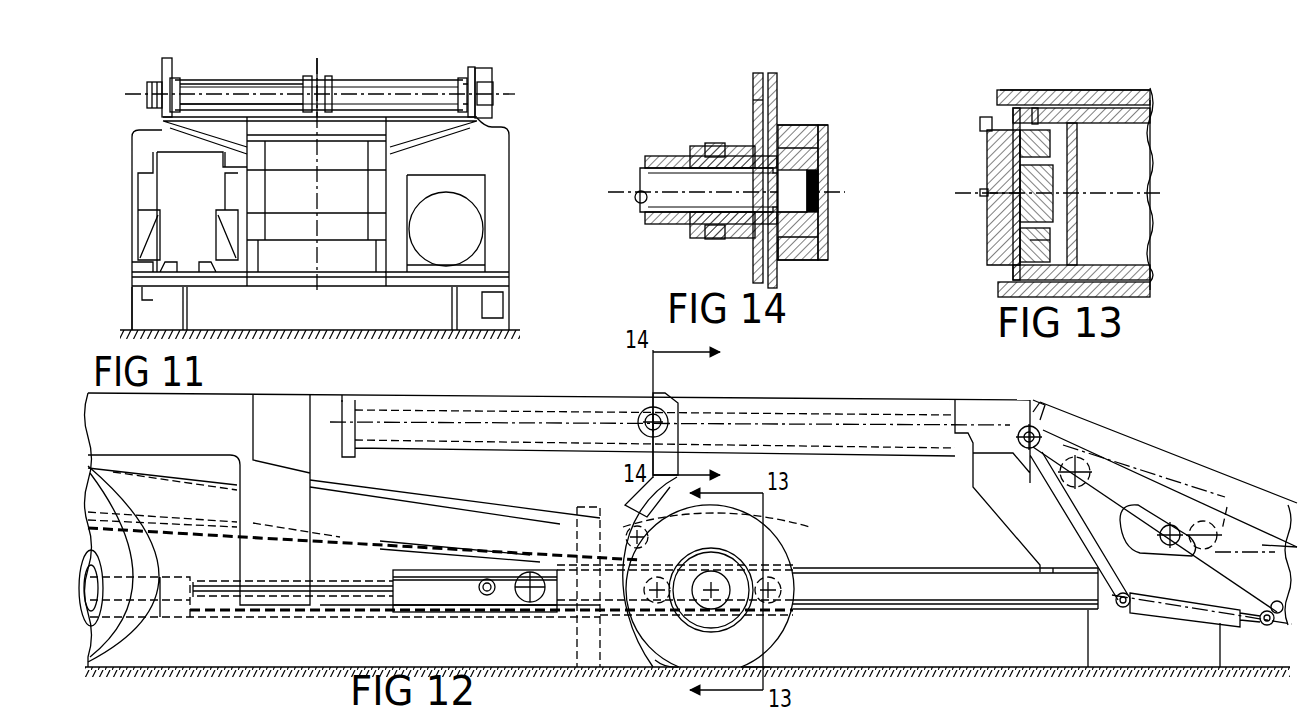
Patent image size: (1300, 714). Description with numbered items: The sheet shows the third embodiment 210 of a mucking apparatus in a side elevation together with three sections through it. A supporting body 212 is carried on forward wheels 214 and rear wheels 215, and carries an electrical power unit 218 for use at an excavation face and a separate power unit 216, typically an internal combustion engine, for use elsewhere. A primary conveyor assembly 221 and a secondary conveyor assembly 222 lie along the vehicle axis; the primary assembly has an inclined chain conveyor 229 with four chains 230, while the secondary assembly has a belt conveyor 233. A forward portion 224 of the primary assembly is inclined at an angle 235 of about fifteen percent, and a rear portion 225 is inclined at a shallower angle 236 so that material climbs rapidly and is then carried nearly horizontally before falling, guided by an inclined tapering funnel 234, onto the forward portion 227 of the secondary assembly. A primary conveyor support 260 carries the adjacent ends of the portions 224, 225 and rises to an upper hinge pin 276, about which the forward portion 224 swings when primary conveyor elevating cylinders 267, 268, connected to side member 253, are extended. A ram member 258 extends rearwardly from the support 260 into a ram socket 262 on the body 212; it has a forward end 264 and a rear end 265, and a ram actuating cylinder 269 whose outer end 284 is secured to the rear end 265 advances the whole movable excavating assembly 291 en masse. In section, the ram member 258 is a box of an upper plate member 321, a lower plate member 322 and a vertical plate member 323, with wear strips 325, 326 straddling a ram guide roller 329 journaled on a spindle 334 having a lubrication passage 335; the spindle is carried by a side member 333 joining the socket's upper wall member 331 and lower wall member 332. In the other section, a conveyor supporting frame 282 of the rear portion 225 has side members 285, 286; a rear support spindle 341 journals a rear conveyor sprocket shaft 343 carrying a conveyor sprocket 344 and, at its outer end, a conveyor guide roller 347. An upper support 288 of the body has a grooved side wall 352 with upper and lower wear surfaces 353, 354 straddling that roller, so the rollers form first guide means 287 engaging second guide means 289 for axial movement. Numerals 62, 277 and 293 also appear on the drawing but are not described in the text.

In FIG. 11, the base member 62 is at (291, 280).
In FIG. 11, the third embodiment 210 is at (533, 118).
In FIG. 12, the third embodiment 210 is at (470, 387).
In FIG. 11, the supporting body 212 is at (335, 290).
In FIG. 12, the supporting body 212 is at (297, 623).
In FIG. 11, the forward wheels 214 is at (170, 308).
In FIG. 12, the forward wheels 214 is at (772, 633).
In FIG. 12, the rear wheels 215 is at (107, 632).
In FIG. 11, the separate power unit 216 is at (188, 182).
In FIG. 11, the electrical power unit 218 is at (450, 233).
In FIG. 11, the primary conveyor assembly 221 is at (319, 65).
In FIG. 14, the primary conveyor assembly 221 is at (672, 146).
In FIG. 12, the primary conveyor assembly 221 is at (1151, 452).
In FIG. 12, the secondary conveyor assembly 222 is at (196, 453).
In FIG. 12, the forward portion of the primary conveyor assembly 224 is at (1243, 438).
In FIG. 14, the rear portion of the primary conveyor assembly 225 is at (706, 138).
In FIG. 12, the rear portion of the primary conveyor assembly 225 is at (768, 428).
In FIG. 12, the forward portion of the secondary conveyor assembly 227 is at (582, 562).
In FIG. 11, the inclined chain conveyor 229 is at (352, 38).
In FIG. 11, the chains 230 is at (333, 72).
In FIG. 12, the chains 230 is at (1227, 507).
In FIG. 12, the belt conveyor 233 is at (577, 482).
In FIG. 12, the inclined tapering funnel 234 is at (262, 420).
In FIG. 12, the angle of forward portion 235 is at (1252, 527).
In FIG. 12, the angle of rear portion 236 is at (820, 433).
In FIG. 12, the side member of the primary conveyor assembly 253 is at (1117, 452).
In FIG. 13, the ram member 258 is at (1158, 232).
In FIG. 12, the ram member 258 is at (880, 612).
In FIG. 12, the primary conveyor support 260 is at (1027, 517).
In FIG. 13, the ram socket 262 is at (1095, 88).
In FIG. 12, the ram socket 262 is at (640, 632).
In FIG. 12, the forward end of the ram member 264 is at (1088, 612).
In FIG. 12, the rear end of the ram member 265 is at (512, 567).
In FIG. 12, the primary conveyor elevating cylinder 267 is at (1169, 665).
In FIG. 12, the primary conveyor elevating cylinder 268 is at (1220, 626).
In FIG. 12, the ram actuating cylinder 269 is at (173, 575).
In FIG. 12, the upper hinge pin 276 is at (1037, 423).
In FIG. 12, the hydraulic cylinder 277 is at (1210, 578).
In FIG. 14, the conveyor supporting frame 282 is at (757, 70).
In FIG. 12, the outer end of the ram actuating cylinder 284 is at (488, 560).
In FIG. 11, the side member of the conveyor supporting frame 285 is at (466, 73).
In FIG. 14, the side member of the conveyor supporting frame 285 is at (753, 93).
In FIG. 12, the side member of the conveyor supporting frame 285 is at (670, 410).
In FIG. 11, the side member of the conveyor supporting frame 286 is at (247, 72).
In FIG. 12, the side member of the conveyor supporting frame 286 is at (753, 390).
In FIG. 11, the first guide means 287 is at (320, 84).
In FIG. 14, the first guide means 287 is at (809, 160).
In FIG. 11, the upper support 288 is at (346, 72).
In FIG. 14, the upper support 288 is at (864, 162).
In FIG. 11, the second guide means 289 is at (150, 80).
In FIG. 14, the second guide means 289 is at (827, 123).
In FIG. 12, the movable excavating assembly 291 is at (1005, 395).
In FIG. 12, the roller 293 is at (663, 667).
In FIG. 13, the upper plate member 321 is at (1130, 123).
In FIG. 13, the lower plate member 322 is at (1140, 277).
In FIG. 13, the vertical plate member 323 is at (1077, 181).
In FIG. 13, the wear strip 325 is at (1045, 130).
In FIG. 13, the wear strip 326 is at (1047, 260).
In FIG. 13, the ram guide roller 329 is at (1040, 237).
In FIG. 12, the ram guide roller 329 is at (490, 590).
In FIG. 13, the upper wall member 331 is at (1102, 90).
In FIG. 13, the lower wall member 332 is at (1130, 291).
In FIG. 13, the side member of the ram socket 333 is at (1000, 148).
In FIG. 13, the spindle 334 is at (1027, 210).
In FIG. 13, the lubrication passage 335 is at (1003, 194).
In FIG. 14, the rear support spindle 341 is at (667, 205).
In FIG. 14, the rear conveyor sprocket shaft 343 is at (662, 160).
In FIG. 14, the conveyor sprocket 344 is at (717, 240).
In FIG. 14, the conveyor guide roller 347 is at (807, 223).
In FIG. 14, the grooved side wall 352 is at (771, 73).
In FIG. 14, the upper wear surface 353 is at (813, 133).
In FIG. 14, the lower wear surface 354 is at (793, 243).